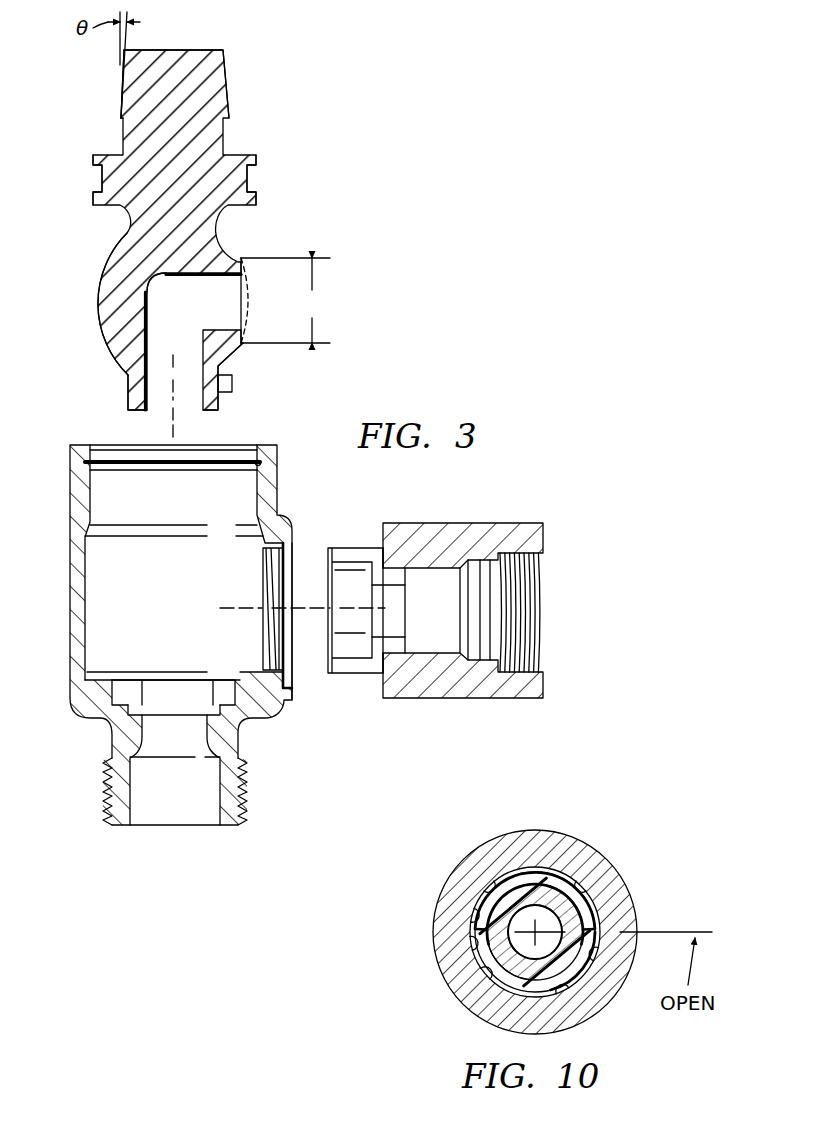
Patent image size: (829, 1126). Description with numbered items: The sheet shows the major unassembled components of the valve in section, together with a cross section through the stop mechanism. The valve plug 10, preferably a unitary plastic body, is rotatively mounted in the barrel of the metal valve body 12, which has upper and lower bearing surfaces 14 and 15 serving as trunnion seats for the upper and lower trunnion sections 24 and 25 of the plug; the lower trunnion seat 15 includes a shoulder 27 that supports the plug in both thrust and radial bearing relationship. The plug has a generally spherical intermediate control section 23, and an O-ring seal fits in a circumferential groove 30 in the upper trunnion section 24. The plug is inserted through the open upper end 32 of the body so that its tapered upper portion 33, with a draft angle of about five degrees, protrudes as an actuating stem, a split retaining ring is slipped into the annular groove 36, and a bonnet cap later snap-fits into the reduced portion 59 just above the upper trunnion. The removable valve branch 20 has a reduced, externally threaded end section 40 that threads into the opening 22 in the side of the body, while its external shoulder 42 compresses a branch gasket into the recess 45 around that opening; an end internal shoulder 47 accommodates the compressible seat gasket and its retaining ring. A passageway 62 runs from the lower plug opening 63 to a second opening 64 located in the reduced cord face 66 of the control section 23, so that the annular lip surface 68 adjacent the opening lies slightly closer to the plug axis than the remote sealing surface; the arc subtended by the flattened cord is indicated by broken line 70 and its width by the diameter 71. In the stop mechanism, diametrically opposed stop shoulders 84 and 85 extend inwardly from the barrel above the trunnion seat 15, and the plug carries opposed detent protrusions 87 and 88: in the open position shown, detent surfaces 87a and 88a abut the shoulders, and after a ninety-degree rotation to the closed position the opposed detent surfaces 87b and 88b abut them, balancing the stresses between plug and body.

In FIG. 3, the valve plug 10 is at (94, 256).
In FIG. 10, the valve plug 10 is at (532, 890).
In FIG. 3, the valve body 12 is at (67, 545).
In FIG. 10, the valve body 12 is at (571, 845).
In FIG. 3, the upper bearing surface 14 is at (90, 490).
In FIG. 3, the lower bearing surface 15 is at (140, 700).
In FIG. 3, the valve branch 20 is at (456, 521).
In FIG. 3, the opening 22 is at (268, 548).
In FIG. 3, the intermediate control section 23 is at (95, 300).
In FIG. 3, the upper trunnion section 24 is at (257, 162).
In FIG. 3, the lower trunnion section 25 is at (220, 402).
In FIG. 3, the shoulder 27 is at (205, 710).
In FIG. 3, the circumferential groove 30 is at (93, 183).
In FIG. 3, the open upper end 32 is at (215, 445).
In FIG. 3, the upper portion 33 is at (230, 78).
In FIG. 3, the annular groove 36 is at (258, 466).
In FIG. 3, the externally threaded end section 40 is at (365, 674).
In FIG. 3, the external shoulder 42 is at (383, 535).
In FIG. 3, the recess 45 is at (291, 540).
In FIG. 3, the end internal shoulder 47 is at (373, 647).
In FIG. 3, the reduced portion 59 is at (121, 128).
In FIG. 3, the passageway 62 is at (194, 341).
In FIG. 3, the lower plug opening 63 is at (158, 412).
In FIG. 3, the second opening 64 is at (247, 292).
In FIG. 3, the reduced cord face 66 is at (245, 344).
In FIG. 3, the annular lip surface 68 is at (241, 258).
In FIG. 3, the broken line 70 is at (250, 310).
In FIG. 3, the diameter 71 is at (312, 300).
In FIG. 10, the stop shoulder 84 is at (467, 944).
In FIG. 3, the stop shoulder 85 is at (215, 690).
In FIG. 10, the stop shoulder 85 is at (610, 920).
In FIG. 10, the detent protrusion 87 is at (480, 875).
In FIG. 10, the detent surface 87a is at (468, 912).
In FIG. 10, the detent surface 87b is at (478, 976).
In FIG. 3, the detent protrusion 88 is at (232, 383).
In FIG. 10, the detent protrusion 88 is at (580, 1000).
In FIG. 10, the detent surface 88a is at (604, 955).
In FIG. 10, the detent surface 88b is at (590, 898).